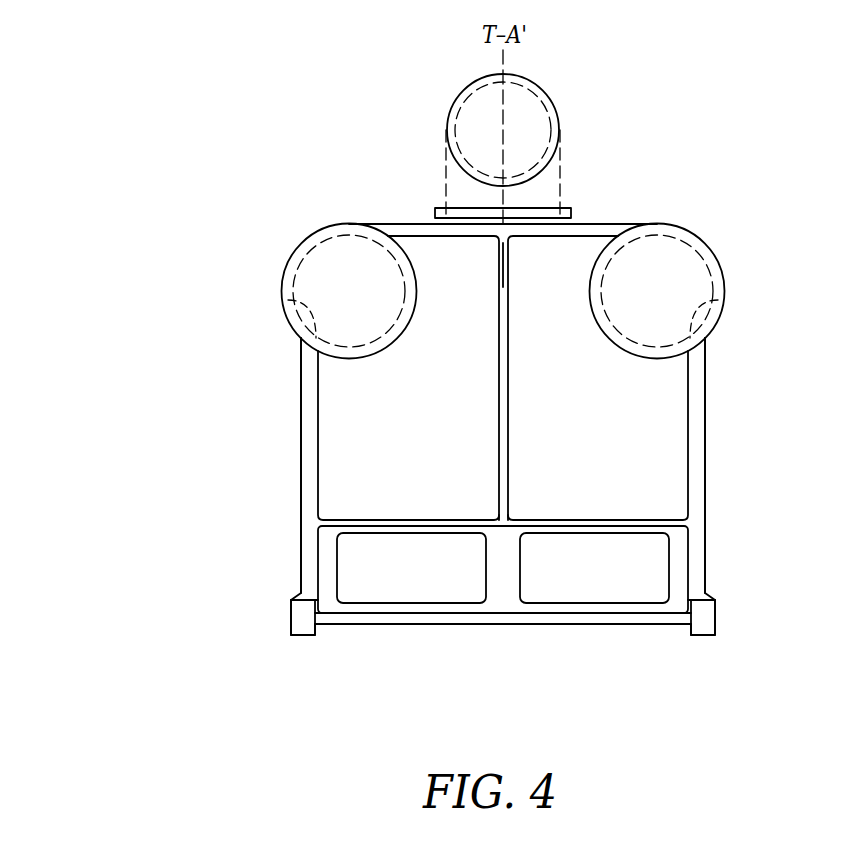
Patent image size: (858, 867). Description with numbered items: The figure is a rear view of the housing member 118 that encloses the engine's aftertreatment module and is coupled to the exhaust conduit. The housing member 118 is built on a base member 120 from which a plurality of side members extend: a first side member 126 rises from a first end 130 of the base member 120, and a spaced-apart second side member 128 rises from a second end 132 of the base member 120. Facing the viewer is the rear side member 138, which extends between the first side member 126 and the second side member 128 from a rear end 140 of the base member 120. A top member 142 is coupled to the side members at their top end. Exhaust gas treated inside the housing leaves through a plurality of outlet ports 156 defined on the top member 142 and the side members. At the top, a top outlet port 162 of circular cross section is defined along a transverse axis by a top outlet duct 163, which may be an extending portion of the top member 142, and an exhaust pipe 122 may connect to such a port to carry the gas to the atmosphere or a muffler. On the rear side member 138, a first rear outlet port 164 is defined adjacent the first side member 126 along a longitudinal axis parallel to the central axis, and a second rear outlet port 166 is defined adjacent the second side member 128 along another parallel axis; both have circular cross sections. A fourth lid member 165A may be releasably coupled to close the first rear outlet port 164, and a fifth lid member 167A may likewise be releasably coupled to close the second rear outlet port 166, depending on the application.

The housing member 118 is at (233, 192).
The base member 120 is at (445, 627).
The exhaust pipe 122 is at (543, 88).
The first side member 126 is at (301, 457).
The second side member 128 is at (706, 432).
The first end 130 is at (268, 602).
The second end 132 is at (740, 603).
The rear side member 138 is at (657, 487).
The rear end 140 is at (601, 648).
The top member 142 is at (600, 224).
The plurality of outlet ports 156 is at (752, 207).
The top outlet port 162 is at (552, 205).
The top outlet duct 163 is at (442, 217).
The first rear outlet port 164 is at (290, 300).
The fourth lid member 165A is at (293, 248).
The second rear outlet port 166 is at (718, 300).
The fifth lid member 167A is at (716, 249).